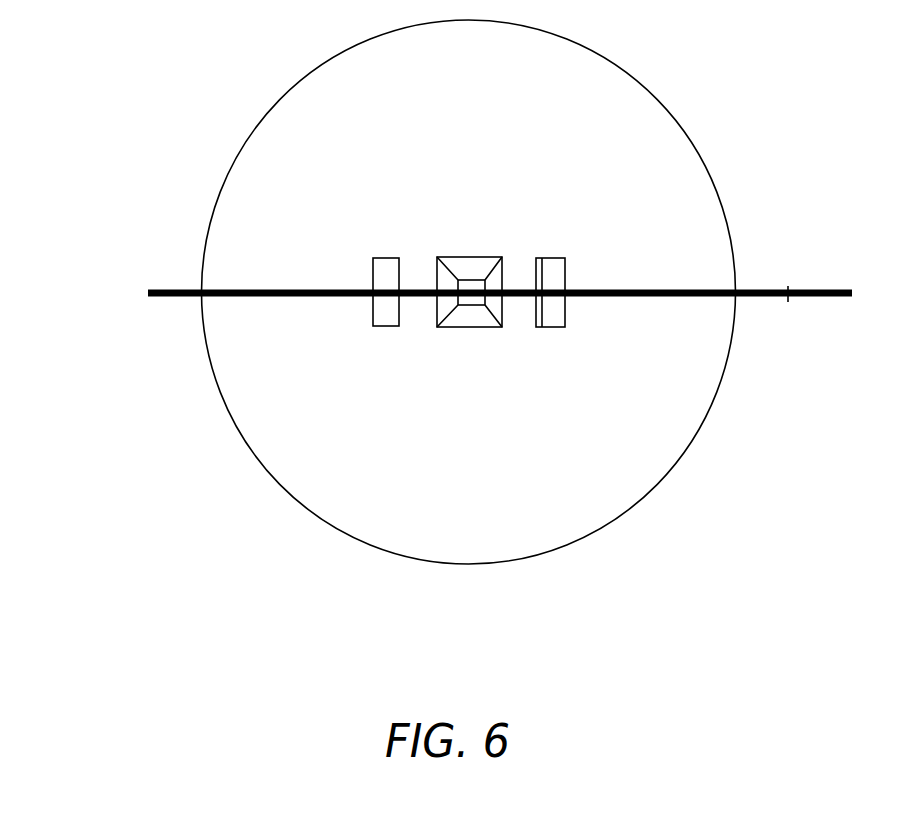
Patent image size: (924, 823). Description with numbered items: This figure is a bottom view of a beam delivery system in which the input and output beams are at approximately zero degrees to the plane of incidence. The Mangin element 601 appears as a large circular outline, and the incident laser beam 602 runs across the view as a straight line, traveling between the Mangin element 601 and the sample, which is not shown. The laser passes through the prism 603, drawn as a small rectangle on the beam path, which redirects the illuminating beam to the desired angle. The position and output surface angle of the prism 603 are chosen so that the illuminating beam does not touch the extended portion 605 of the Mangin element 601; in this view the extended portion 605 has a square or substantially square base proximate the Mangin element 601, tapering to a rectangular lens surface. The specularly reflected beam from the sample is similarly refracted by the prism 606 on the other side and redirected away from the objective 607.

The Mangin element 601 is at (660, 100).
The incident laser beam 602 is at (170, 282).
The prism 603 is at (380, 327).
The extended portion 605 is at (463, 257).
The prism 606 is at (553, 327).
The objective 607 is at (757, 282).